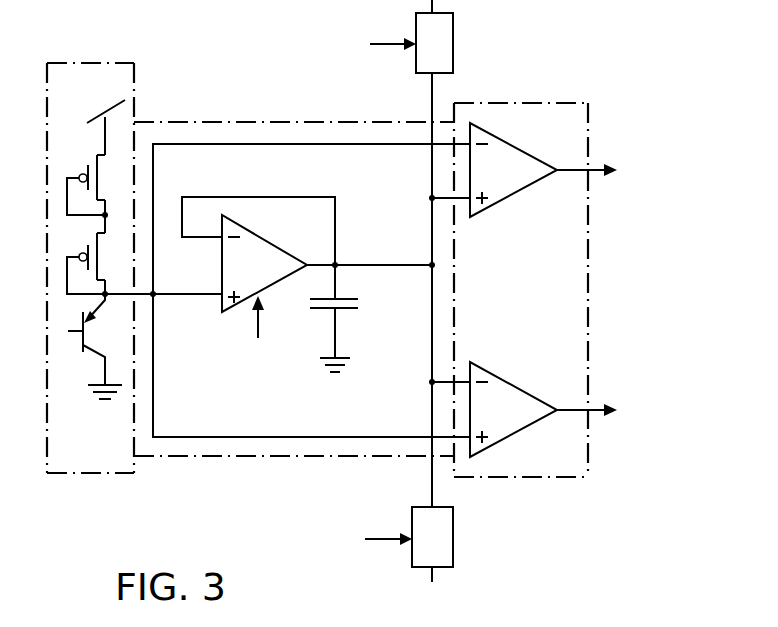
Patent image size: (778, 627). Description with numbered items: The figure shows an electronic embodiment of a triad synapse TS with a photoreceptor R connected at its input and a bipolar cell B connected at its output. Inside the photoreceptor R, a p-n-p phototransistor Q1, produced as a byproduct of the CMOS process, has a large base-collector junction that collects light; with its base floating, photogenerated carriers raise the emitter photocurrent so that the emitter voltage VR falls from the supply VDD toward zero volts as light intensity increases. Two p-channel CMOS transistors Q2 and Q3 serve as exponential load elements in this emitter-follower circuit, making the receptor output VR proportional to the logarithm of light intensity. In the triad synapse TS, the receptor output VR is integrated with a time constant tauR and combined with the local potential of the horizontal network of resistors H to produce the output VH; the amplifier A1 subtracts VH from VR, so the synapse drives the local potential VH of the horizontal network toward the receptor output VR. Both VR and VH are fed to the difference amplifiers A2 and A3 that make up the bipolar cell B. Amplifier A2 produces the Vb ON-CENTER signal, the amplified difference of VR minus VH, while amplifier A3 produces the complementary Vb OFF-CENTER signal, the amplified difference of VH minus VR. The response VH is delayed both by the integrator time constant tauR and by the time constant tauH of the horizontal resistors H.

The photoreceptor R is at (90, 474).
The triad synapse TS is at (250, 122).
The bipolar cell B is at (548, 103).
The phototransistor Q1 is at (95, 346).
The p-channel CMOS transistor Q2 is at (95, 256).
The p-channel CMOS transistor Q3 is at (95, 186).
The amplifier A1 is at (258, 254).
The difference amplifier A2 is at (493, 409).
The difference amplifier A3 is at (493, 170).
The horizontal network of resistors H is at (432, 291).
The supply voltage VDD is at (91, 116).
The receptor output voltage VR is at (144, 275).
The local potential of horizontal network VH is at (432, 265).
The bipolar cell output signal Vb is at (626, 306).
The integrator time constant tauR is at (262, 339).
The horizontal resistor time constant tauH is at (371, 293).